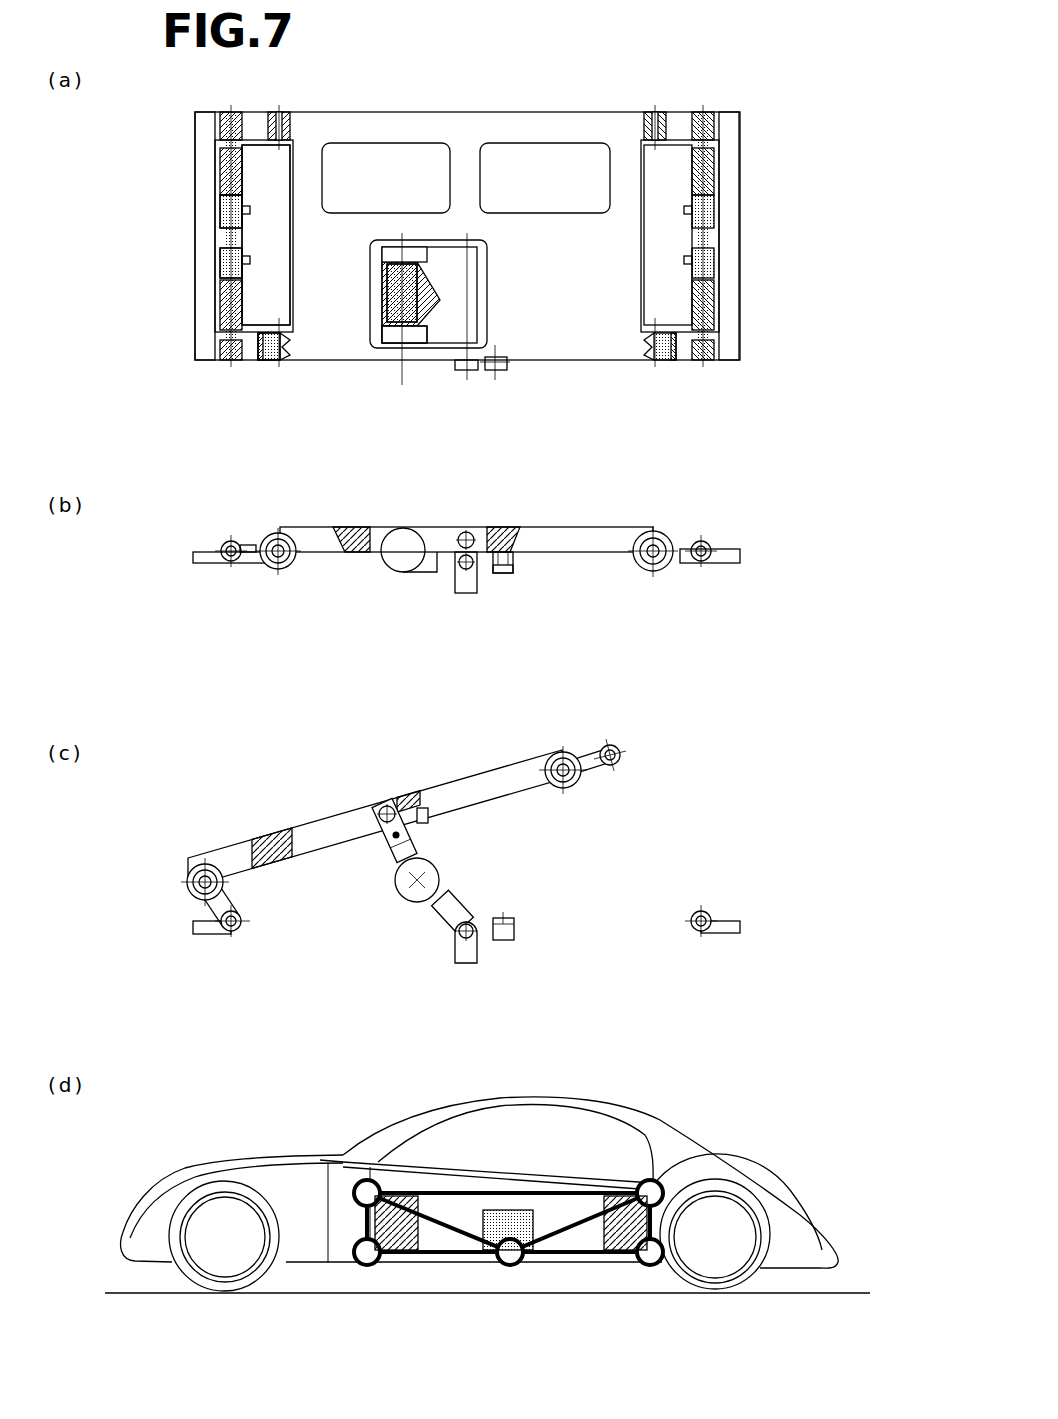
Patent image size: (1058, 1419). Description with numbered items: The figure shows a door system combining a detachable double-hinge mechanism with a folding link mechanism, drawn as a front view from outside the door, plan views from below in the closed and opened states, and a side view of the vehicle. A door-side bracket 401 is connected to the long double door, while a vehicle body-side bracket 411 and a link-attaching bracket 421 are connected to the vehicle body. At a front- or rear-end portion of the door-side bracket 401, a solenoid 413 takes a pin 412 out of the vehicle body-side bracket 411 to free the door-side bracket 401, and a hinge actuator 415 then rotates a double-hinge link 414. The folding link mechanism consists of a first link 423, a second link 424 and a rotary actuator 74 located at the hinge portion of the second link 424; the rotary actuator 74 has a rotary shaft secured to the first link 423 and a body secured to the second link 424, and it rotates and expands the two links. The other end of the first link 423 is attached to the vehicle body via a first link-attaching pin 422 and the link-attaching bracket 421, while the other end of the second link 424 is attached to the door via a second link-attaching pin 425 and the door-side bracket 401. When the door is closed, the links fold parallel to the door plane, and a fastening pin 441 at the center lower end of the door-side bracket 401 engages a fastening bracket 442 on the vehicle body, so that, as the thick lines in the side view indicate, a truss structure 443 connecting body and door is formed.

The door-side bracket 401 is at (317, 250).
The vehicle body-side bracket 411 is at (203, 241).
The pin 412 is at (229, 295).
The solenoid 413 is at (228, 257).
The double-hinge link 414 is at (272, 282).
The hinge actuator 415 is at (273, 355).
The link-attaching bracket 421 is at (472, 365).
The first link-attaching pin 422 is at (455, 277).
The first link 423 is at (412, 331).
The second link 424 is at (499, 563).
The second link-attaching pin 425 is at (508, 574).
The fastening pin 441 is at (426, 822).
The fastening bracket 442 is at (500, 364).
The truss structure 443 is at (592, 1185).
The rotary actuator 74 is at (397, 312).